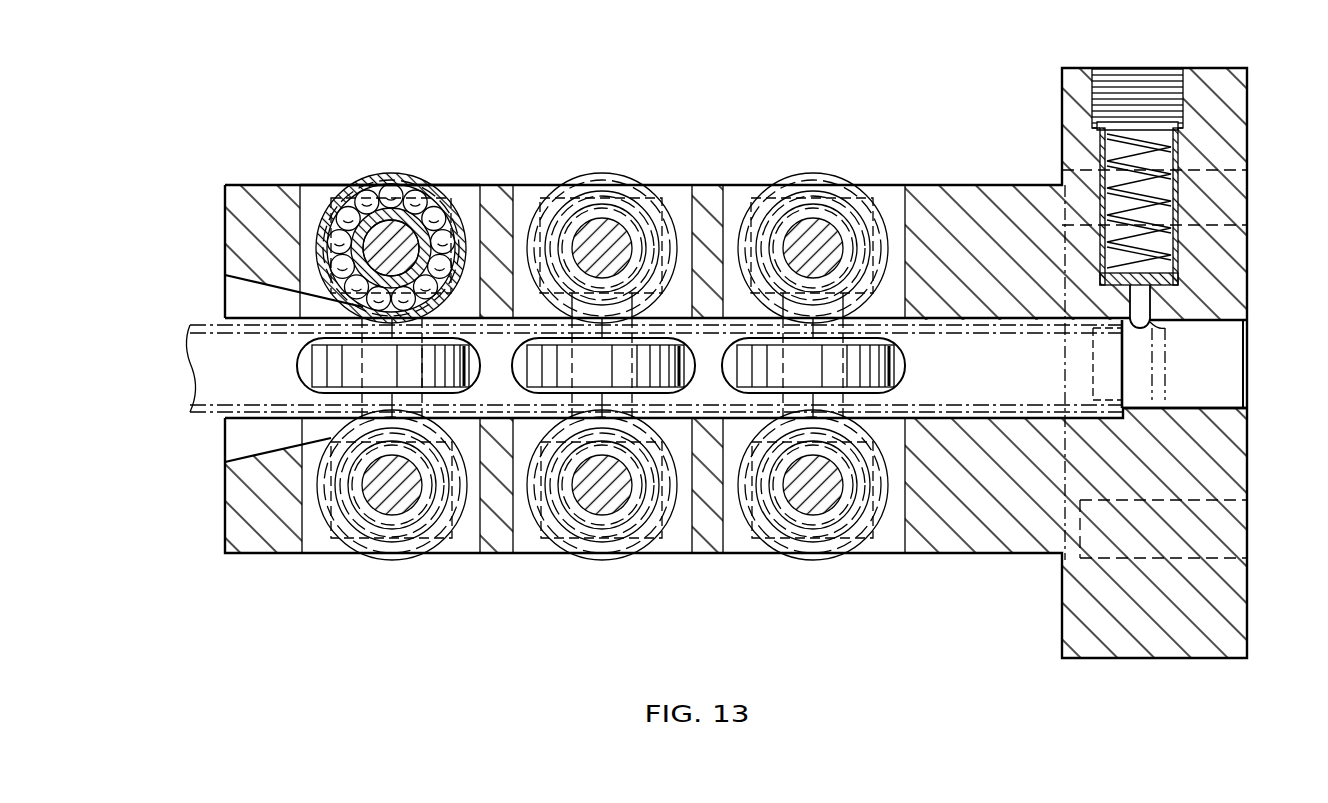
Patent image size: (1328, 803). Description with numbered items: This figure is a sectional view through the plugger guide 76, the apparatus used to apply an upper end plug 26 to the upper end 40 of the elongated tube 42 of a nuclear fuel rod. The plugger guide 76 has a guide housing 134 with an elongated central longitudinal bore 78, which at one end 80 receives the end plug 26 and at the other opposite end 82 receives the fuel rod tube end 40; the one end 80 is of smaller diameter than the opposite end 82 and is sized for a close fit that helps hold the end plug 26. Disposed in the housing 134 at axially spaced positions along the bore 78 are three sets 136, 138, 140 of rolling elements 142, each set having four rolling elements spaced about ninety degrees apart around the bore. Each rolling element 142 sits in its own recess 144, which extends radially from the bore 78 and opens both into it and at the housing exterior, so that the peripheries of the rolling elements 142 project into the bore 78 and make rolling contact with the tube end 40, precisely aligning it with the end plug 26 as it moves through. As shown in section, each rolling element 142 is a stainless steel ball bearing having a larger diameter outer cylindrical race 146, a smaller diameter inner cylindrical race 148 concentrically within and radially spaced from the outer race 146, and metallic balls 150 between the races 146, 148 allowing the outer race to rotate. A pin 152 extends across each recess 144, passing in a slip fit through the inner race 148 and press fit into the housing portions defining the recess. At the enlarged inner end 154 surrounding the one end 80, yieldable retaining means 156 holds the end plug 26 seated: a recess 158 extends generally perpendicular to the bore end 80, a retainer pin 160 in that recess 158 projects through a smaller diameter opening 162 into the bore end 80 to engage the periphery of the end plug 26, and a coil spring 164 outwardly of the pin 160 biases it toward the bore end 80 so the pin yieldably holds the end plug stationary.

The plugger guide 76 is at (672, 104).
The guide housing 134 is at (984, 181).
The set of rolling elements 136 is at (389, 173).
The set of rolling elements 138 is at (591, 173).
The set of rolling elements 140 is at (801, 173).
The rolling element 142 is at (419, 181).
The recess 144 is at (521, 186).
The outer cylindrical race 146 is at (432, 193).
The inner cylindrical race 148 is at (326, 303).
The metallic balls 150 is at (328, 236).
The pin 152 is at (366, 206).
The enlarged inner end 154 is at (1250, 86).
The yieldable retaining means 156 is at (1184, 147).
The recess 158 is at (1185, 241).
The retainer pin 160 is at (1149, 303).
The smaller diameter opening 162 is at (1160, 318).
The coil spring 164 is at (1200, 193).
The upper end plug 26 is at (1166, 354).
The upper end 40 is at (1166, 410).
The elongated tube 42 is at (1010, 432).
The central longitudinal bore 78 is at (986, 330).
The one end 80 is at (1238, 406).
The other opposite end 82 is at (244, 457).